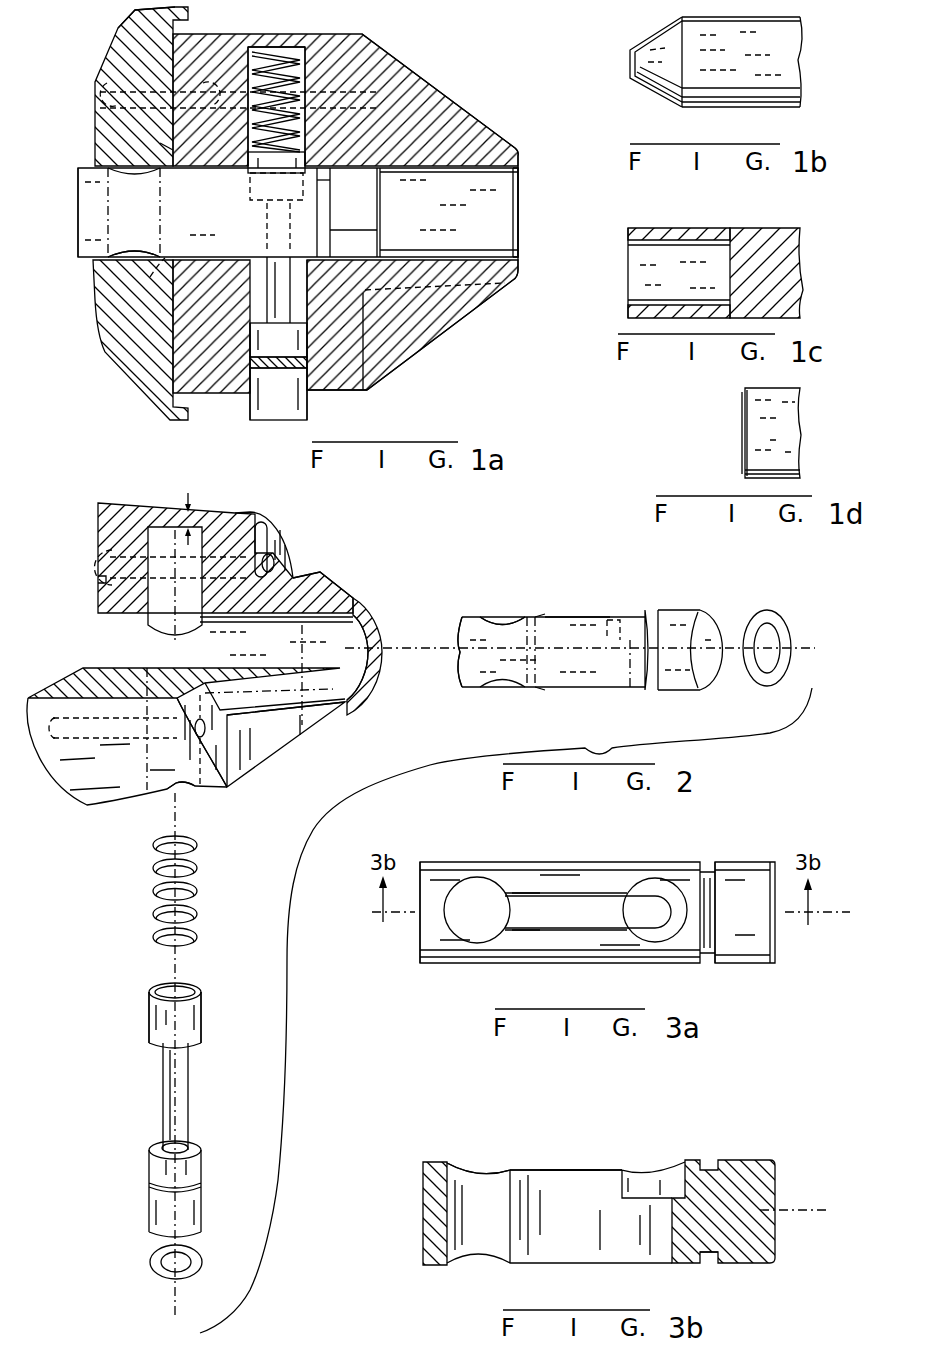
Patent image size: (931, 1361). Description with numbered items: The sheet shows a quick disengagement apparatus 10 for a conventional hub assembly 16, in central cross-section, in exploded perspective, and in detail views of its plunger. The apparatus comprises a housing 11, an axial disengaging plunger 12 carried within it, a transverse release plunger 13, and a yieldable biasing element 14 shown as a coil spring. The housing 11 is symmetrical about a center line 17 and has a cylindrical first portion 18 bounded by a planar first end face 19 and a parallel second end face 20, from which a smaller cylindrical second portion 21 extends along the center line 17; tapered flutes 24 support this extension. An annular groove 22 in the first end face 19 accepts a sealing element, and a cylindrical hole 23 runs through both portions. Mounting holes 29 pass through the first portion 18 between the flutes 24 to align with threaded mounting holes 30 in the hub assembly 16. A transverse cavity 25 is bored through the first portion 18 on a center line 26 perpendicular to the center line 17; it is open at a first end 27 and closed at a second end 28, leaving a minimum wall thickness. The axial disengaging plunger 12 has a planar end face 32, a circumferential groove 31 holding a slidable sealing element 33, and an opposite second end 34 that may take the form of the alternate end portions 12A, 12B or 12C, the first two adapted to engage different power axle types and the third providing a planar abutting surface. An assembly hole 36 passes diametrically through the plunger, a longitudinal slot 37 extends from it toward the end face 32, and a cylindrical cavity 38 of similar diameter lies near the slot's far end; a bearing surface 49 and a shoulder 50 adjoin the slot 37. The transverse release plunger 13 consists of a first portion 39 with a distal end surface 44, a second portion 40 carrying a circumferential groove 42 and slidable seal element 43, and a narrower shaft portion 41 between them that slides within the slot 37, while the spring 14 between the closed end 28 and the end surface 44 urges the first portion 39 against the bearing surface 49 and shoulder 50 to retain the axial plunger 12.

In FIG. 1A, the quick disengagement apparatus 10 is at (445, 46).
In FIG. 1A, the housing 11 is at (521, 278).
In FIG. 2, the housing 11 is at (227, 790).
In FIG. 1A, the axial disengaging plunger 12 is at (370, 183).
In FIG. 2, the axial disengaging plunger 12 is at (608, 690).
In FIG. 3A, the axial disengaging plunger 12 is at (637, 856).
In FIG. 3B, the axial disengaging plunger 12 is at (524, 1269).
In FIG. 1B, the end portion 12A is at (690, 57).
In FIG. 1C, the end portion 12B is at (705, 240).
In FIG. 1D, the end portion 12C is at (760, 424).
In FIG. 1A, the transverse release plunger 13 is at (262, 395).
In FIG. 2, the transverse release plunger 13 is at (133, 1092).
In FIG. 1A, the yieldable biasing element 14 is at (262, 50).
In FIG. 2, the yieldable biasing element 14 is at (196, 874).
In FIG. 1A, the hub assembly 16 is at (128, 32).
In FIG. 2, the center line 17 is at (400, 648).
In FIG. 3A, the center line 17 is at (842, 912).
In FIG. 3B, the center line 17 is at (812, 1212).
In FIG. 1A, the first portion 18 is at (348, 48).
In FIG. 2, the first portion 18 is at (78, 780).
In FIG. 1A, the first end face 19 is at (178, 343).
In FIG. 2, the first end face 19 is at (98, 522).
In FIG. 1A, the second end face 20 is at (398, 362).
In FIG. 2, the second end face 20 is at (222, 758).
In FIG. 1A, the second portion 21 is at (412, 272).
In FIG. 2, the second portion 21 is at (347, 710).
In FIG. 1A, the annular groove 22 is at (160, 143).
In FIG. 2, the annular groove 22 is at (98, 579).
In FIG. 1A, the hole 23 is at (505, 186).
In FIG. 2, the hole 23 is at (363, 632).
In FIG. 1A, the tapered flutes 24 is at (440, 115).
In FIG. 2, the tapered flutes 24 is at (322, 574).
In FIG. 1A, the transverse cavity 25 is at (305, 290).
In FIG. 2, the transverse cavity 25 is at (122, 668).
In FIG. 2, the center line 26 is at (186, 958).
In FIG. 1A, the first end 27 is at (305, 391).
In FIG. 2, the first end 27 is at (158, 797).
In FIG. 1A, the second end 28 is at (300, 47).
In FIG. 2, the second end 28 is at (170, 527).
In FIG. 1A, the mounting holes 29 is at (213, 82).
In FIG. 2, the mounting holes 29 is at (270, 556).
In FIG. 1A, the threaded mounting holes 30 is at (237, 86).
In FIG. 1A, the groove 31 is at (340, 191).
In FIG. 2, the groove 31 is at (660, 616).
In FIG. 3A, the groove 31 is at (708, 868).
In FIG. 3B, the groove 31 is at (710, 1260).
In FIG. 1A, the end face 32 is at (383, 224).
In FIG. 2, the end face 32 is at (712, 624).
In FIG. 3A, the end face 32 is at (776, 936).
In FIG. 3B, the end face 32 is at (780, 1182).
In FIG. 1A, the slidable sealing element 33 is at (353, 218).
In FIG. 2, the slidable sealing element 33 is at (780, 612).
In FIG. 1A, the second end 34 is at (78, 210).
In FIG. 2, the second end 34 is at (455, 665).
In FIG. 3A, the second end 34 is at (420, 926).
In FIG. 3B, the second end 34 is at (423, 1197).
In FIG. 1A, the assembly hole 36 is at (135, 252).
In FIG. 2, the assembly hole 36 is at (500, 616).
In FIG. 3A, the assembly hole 36 is at (481, 893).
In FIG. 3B, the assembly hole 36 is at (466, 1190).
In FIG. 1A, the longitudinal slot 37 is at (152, 286).
In FIG. 2, the longitudinal slot 37 is at (568, 616).
In FIG. 3A, the longitudinal slot 37 is at (578, 916).
In FIG. 3B, the longitudinal slot 37 is at (568, 1190).
In FIG. 1A, the cavity 38 is at (250, 190).
In FIG. 2, the cavity 38 is at (622, 622).
In FIG. 3A, the cavity 38 is at (665, 936).
In FIG. 3B, the cavity 38 is at (645, 1186).
In FIG. 1A, the first portion 39 is at (309, 158).
In FIG. 2, the first portion 39 is at (201, 1022).
In FIG. 1A, the second portion 40 is at (278, 394).
In FIG. 2, the second portion 40 is at (158, 1206).
In FIG. 1A, the shaft portion 41 is at (268, 265).
In FIG. 2, the shaft portion 41 is at (189, 1100).
In FIG. 1A, the circumferential groove 42 is at (297, 352).
In FIG. 2, the circumferential groove 42 is at (203, 1187).
In FIG. 1A, the slidable seal element 43 is at (252, 362).
In FIG. 2, the slidable seal element 43 is at (203, 1263).
In FIG. 2, the distal end surface 44 is at (165, 986).
In FIG. 3A, the bearing surface 49 is at (573, 894).
In FIG. 3B, the bearing surface 49 is at (598, 1170).
In FIG. 2, the shoulder 50 is at (535, 617).
In FIG. 3A, the shoulder 50 is at (522, 891).
In FIG. 3B, the shoulder 50 is at (515, 1170).